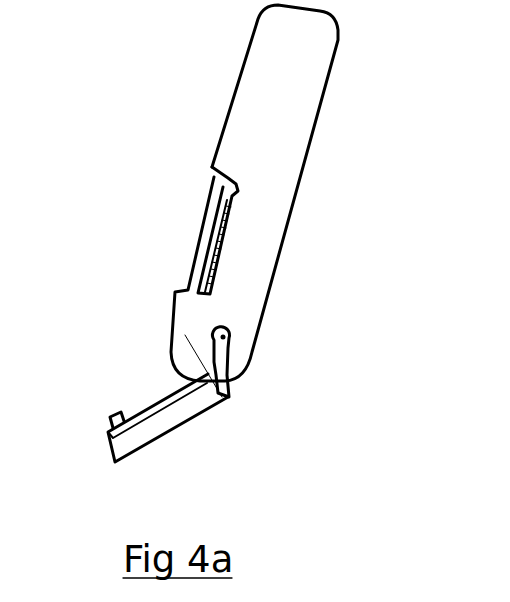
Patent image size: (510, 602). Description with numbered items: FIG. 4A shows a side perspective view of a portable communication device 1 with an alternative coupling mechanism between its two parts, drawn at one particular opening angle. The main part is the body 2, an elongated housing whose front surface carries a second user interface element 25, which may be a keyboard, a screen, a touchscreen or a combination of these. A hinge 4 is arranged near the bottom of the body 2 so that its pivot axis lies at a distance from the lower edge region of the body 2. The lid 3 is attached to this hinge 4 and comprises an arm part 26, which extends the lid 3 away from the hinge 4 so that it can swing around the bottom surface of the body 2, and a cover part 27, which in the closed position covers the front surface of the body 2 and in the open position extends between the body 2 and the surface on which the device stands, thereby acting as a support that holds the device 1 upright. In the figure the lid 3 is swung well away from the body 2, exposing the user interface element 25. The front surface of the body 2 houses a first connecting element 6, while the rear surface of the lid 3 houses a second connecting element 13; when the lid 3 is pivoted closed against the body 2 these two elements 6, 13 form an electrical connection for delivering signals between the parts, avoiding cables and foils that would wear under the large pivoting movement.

The device 1 is at (257, 524).
The body 2 is at (305, 102).
The lid 3 is at (186, 407).
The hinge 4 is at (233, 332).
The first connecting element 6 is at (244, 192).
The second connecting element 13 is at (107, 422).
The second user interface element 25 is at (229, 247).
The arm part 26 is at (208, 376).
The cover part 27 is at (134, 437).